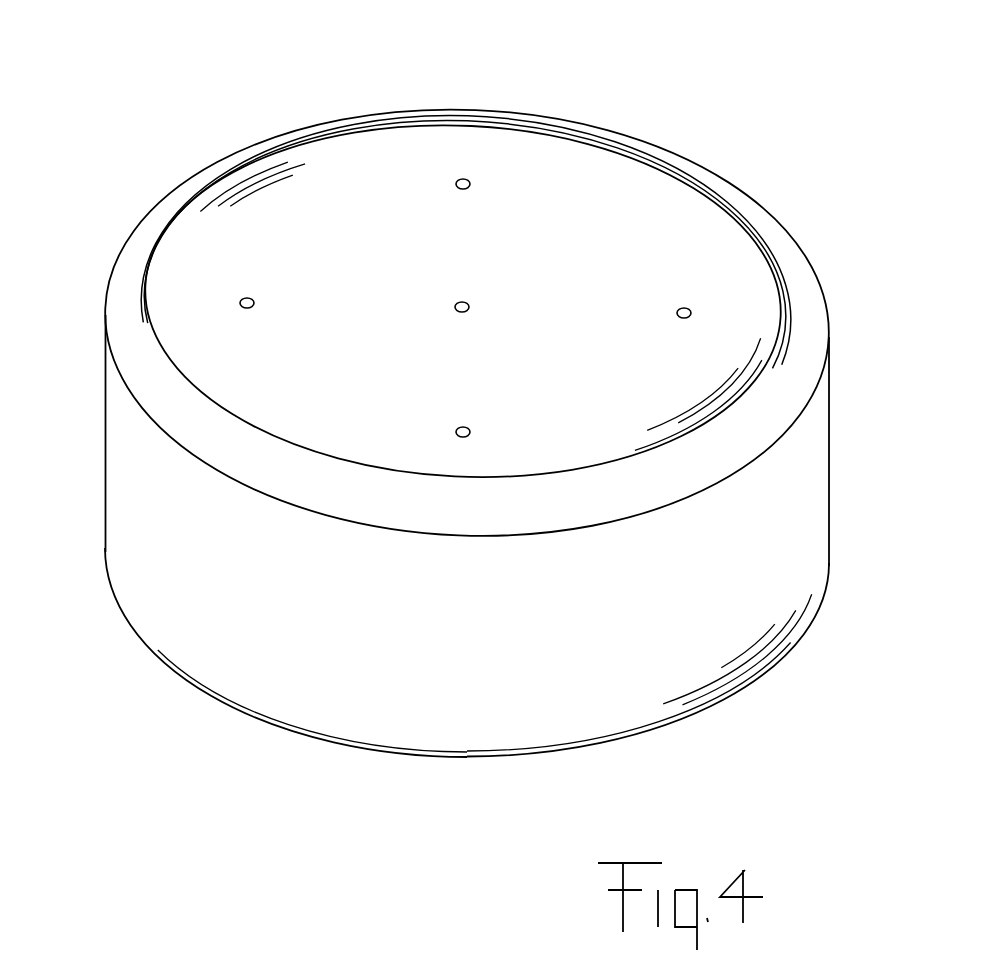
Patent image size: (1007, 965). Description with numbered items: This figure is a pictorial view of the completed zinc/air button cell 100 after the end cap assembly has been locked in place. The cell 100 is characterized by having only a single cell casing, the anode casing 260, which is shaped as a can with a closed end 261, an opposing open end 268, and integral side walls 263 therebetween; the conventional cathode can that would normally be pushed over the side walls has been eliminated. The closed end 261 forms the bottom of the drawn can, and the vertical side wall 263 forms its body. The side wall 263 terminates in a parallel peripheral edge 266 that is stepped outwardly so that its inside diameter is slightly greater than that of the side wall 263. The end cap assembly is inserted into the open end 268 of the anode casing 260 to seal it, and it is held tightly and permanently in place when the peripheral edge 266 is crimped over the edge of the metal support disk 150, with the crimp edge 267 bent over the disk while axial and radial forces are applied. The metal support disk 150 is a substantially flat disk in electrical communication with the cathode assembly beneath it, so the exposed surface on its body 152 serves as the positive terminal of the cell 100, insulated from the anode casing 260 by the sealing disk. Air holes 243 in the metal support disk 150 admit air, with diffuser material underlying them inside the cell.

The zinc/air button cell 100 is at (470, 411).
The metal support disk 150 is at (645, 206).
The body of metal support disk 152 is at (323, 208).
The air holes 243 is at (470, 183).
The anode casing 260 is at (800, 487).
The closed end 261 is at (317, 733).
The side wall 263 is at (132, 507).
The peripheral edge 266 is at (813, 317).
The crimp edge 267 is at (797, 270).
The open end 268 is at (197, 235).